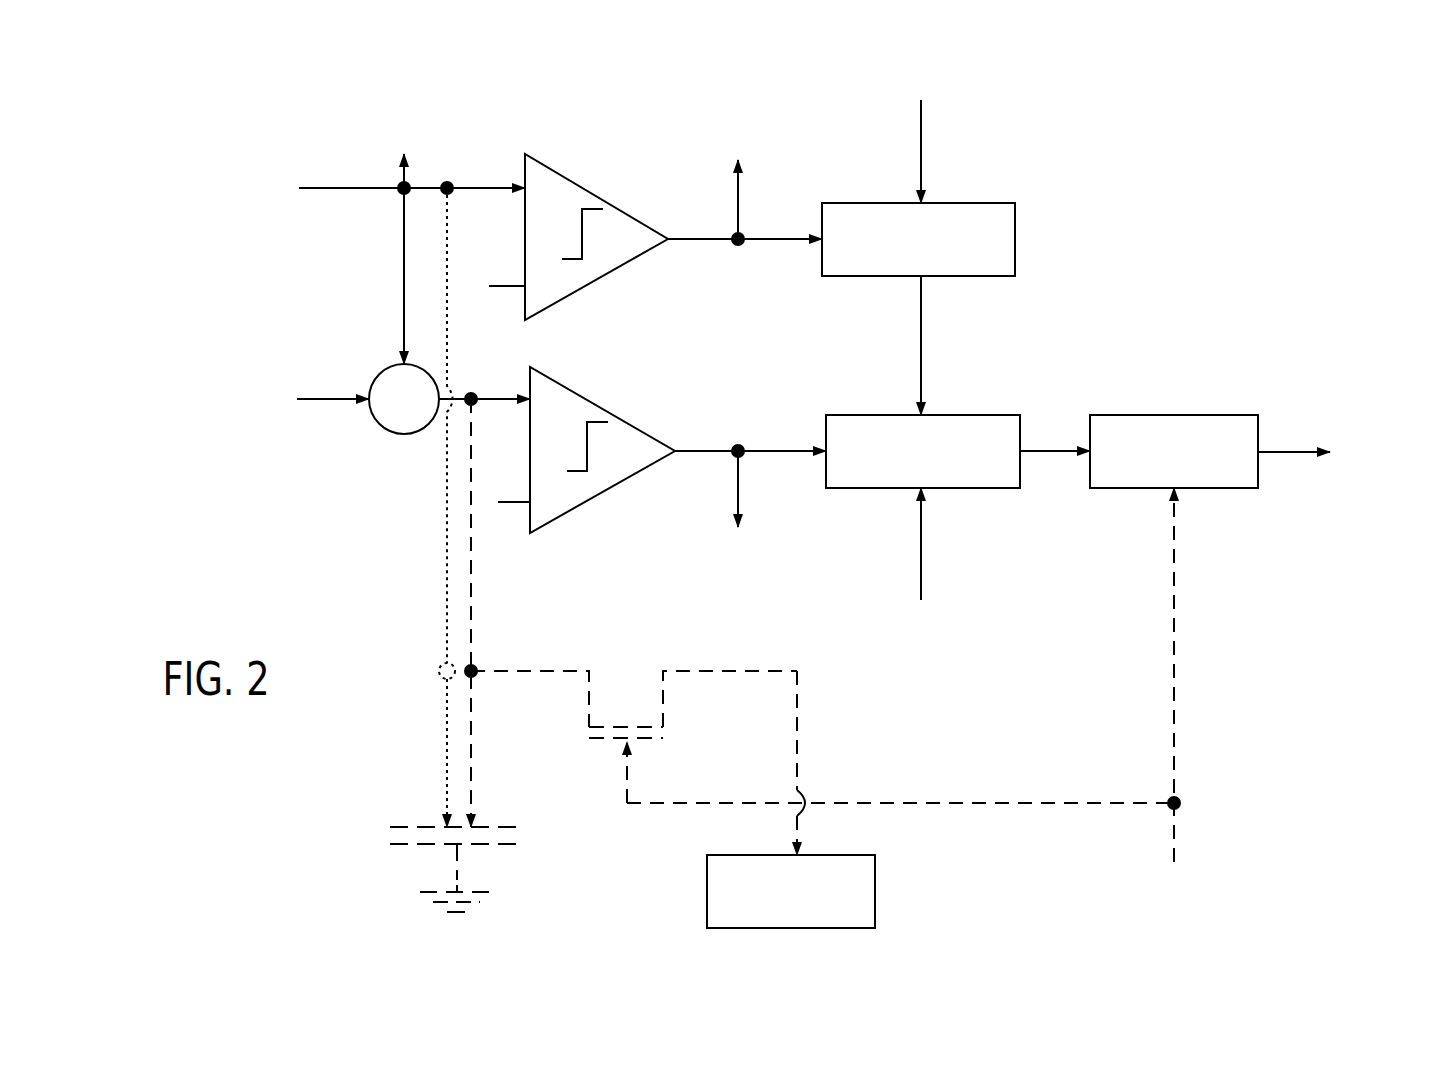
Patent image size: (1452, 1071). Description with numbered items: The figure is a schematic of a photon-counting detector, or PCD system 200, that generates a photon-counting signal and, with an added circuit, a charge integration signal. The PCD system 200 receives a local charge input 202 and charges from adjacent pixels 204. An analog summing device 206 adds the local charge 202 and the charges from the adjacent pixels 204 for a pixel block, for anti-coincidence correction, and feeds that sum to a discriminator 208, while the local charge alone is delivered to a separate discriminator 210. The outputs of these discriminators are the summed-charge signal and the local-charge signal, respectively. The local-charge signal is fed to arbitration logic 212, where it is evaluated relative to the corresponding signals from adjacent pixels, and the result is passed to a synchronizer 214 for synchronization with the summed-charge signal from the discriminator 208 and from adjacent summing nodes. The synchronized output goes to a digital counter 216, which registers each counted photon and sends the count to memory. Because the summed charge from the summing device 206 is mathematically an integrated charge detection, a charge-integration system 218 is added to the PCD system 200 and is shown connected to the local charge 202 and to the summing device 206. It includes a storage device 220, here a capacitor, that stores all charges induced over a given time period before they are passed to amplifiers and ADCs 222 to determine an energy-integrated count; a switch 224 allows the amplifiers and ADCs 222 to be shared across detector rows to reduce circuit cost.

The PCD system 200 is at (1283, 186).
The local charge input 202 is at (173, 216).
The charges from adjacent pixels 204 is at (162, 436).
The summing device 206 is at (404, 435).
The discriminator 208 is at (585, 398).
The discriminator 210 is at (580, 183).
The arbitration logic 212 is at (982, 203).
The synchronizer 214 is at (982, 415).
The digital counter 216 is at (1174, 415).
The charge-integration system 218 is at (409, 633).
The storage device 220 is at (502, 800).
The amplifiers and ADCs 222 is at (843, 855).
The switch 224 is at (643, 678).